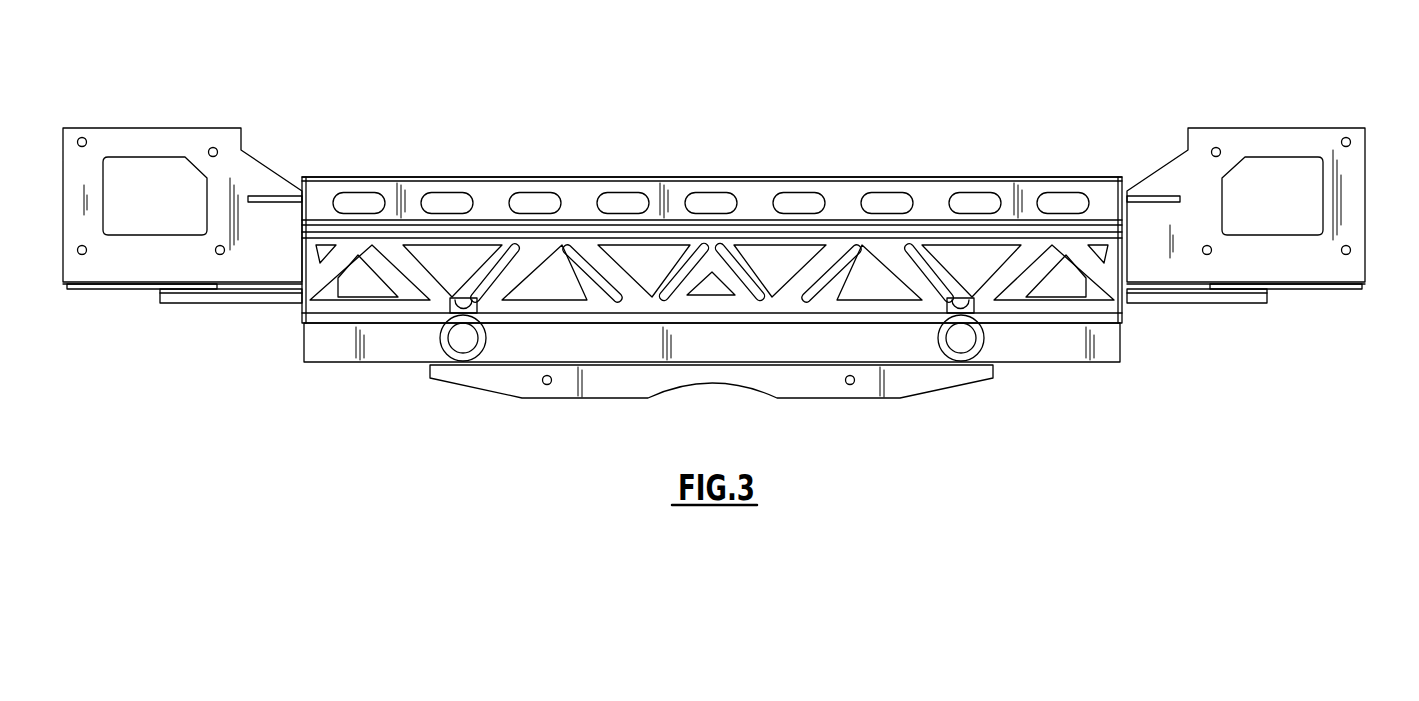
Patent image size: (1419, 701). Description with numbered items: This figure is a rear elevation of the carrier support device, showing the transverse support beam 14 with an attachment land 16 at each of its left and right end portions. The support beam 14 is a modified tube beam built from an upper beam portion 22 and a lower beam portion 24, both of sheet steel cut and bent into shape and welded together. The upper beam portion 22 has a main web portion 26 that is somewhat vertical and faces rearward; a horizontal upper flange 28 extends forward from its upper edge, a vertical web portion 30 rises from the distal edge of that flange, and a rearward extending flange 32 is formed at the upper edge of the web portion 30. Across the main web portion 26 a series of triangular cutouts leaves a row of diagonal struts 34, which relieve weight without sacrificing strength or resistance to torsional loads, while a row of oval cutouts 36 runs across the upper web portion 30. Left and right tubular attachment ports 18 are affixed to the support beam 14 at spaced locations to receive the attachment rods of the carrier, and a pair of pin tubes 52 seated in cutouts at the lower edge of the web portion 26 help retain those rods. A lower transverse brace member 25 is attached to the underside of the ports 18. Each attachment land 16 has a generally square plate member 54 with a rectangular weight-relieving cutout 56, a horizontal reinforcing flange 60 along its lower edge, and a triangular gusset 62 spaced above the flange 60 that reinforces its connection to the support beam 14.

The transverse support beam 14 is at (1028, 107).
The attachment lands 16 is at (738, 199).
The tubular sockets or attachment ports 18 is at (458, 360).
The upper beam portion 22 is at (760, 173).
The lower beam portion 24 is at (347, 362).
The lower transverse brace member 25 is at (610, 398).
The main web portion 26 is at (681, 297).
The horizontal upper flange 28 is at (485, 243).
The vertical web portion 30 is at (575, 196).
The proximal extending flange 32 is at (667, 178).
The diagonal struts 34 is at (610, 270).
The oval cutouts 36 is at (446, 193).
The pin tubes 52 is at (452, 308).
The plate or ear member 54 is at (130, 250).
The weight-relieving cutout 56 is at (168, 213).
The horizontal reinforcing flange 60 is at (170, 291).
The triangular gusset 62 is at (268, 196).